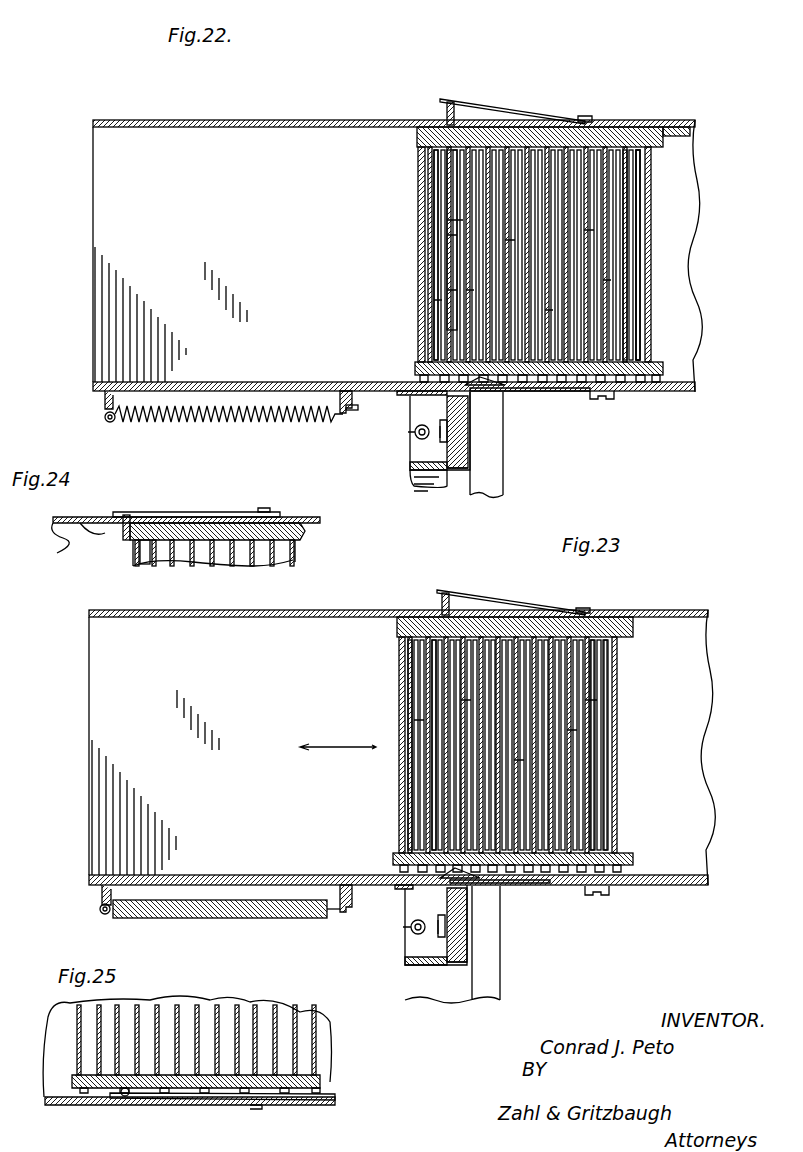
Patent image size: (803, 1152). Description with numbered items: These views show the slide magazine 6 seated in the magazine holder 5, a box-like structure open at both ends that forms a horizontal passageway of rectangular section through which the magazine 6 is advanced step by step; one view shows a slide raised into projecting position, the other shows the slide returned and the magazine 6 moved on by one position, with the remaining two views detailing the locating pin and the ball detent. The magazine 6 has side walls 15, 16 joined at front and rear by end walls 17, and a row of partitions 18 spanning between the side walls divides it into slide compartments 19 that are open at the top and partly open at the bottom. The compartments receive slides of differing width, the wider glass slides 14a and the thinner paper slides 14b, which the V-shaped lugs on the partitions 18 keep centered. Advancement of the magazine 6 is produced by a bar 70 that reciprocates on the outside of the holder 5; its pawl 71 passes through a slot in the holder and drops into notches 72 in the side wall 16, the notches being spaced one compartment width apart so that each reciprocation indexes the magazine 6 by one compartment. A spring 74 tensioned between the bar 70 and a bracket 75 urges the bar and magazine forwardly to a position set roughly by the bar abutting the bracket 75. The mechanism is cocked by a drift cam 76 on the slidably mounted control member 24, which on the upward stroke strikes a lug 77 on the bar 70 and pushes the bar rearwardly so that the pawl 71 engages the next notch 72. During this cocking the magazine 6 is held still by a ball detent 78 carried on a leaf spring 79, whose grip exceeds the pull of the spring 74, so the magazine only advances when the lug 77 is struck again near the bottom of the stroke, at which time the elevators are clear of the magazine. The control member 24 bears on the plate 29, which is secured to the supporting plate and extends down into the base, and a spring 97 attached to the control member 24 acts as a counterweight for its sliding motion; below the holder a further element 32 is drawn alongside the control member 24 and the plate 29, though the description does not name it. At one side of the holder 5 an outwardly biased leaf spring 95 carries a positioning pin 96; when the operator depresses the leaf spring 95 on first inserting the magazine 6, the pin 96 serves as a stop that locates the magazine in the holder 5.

In FIG. 22, the magazine holder 5 is at (220, 120).
In FIG. 24, the magazine holder 5 is at (57, 530).
In FIG. 23, the magazine holder 5 is at (343, 616).
In FIG. 25, the magazine holder 5 is at (62, 1105).
In FIG. 22, the slide magazine 6 is at (416, 208).
In FIG. 23, the slide magazine 6 is at (398, 692).
In FIG. 25, the slide magazine 6 is at (66, 1026).
In FIG. 22, the wider slides 14a is at (543, 140).
In FIG. 23, the wider slides 14a is at (423, 754).
In FIG. 22, the narrower slides 14b is at (638, 125).
In FIG. 23, the narrower slides 14b is at (407, 722).
In FIG. 22, the side wall 15 is at (418, 137).
In FIG. 24, the side wall 15 is at (196, 528).
In FIG. 23, the side wall 15 is at (397, 626).
In FIG. 22, the side wall 16 is at (415, 365).
In FIG. 23, the side wall 16 is at (395, 856).
In FIG. 22, the end walls 17 is at (418, 301).
In FIG. 23, the end walls 17 is at (399, 814).
In FIG. 22, the partitions 18 is at (650, 202).
In FIG. 24, the partitions 18 is at (238, 562).
In FIG. 23, the partitions 18 is at (610, 694).
In FIG. 22, the slide compartments 19 is at (646, 155).
In FIG. 24, the slide compartments 19 is at (157, 563).
In FIG. 23, the slide compartments 19 is at (616, 762).
In FIG. 22, the control member 24 is at (414, 462).
In FIG. 23, the control member 24 is at (435, 977).
In FIG. 22, the plate 29 is at (460, 474).
In FIG. 23, the plate 29 is at (458, 966).
In FIG. 22, the outlet pipe 32 is at (492, 477).
In FIG. 23, the outlet pipe 32 is at (498, 996).
In FIG. 22, the bar 70 is at (523, 385).
In FIG. 23, the bar 70 is at (500, 887).
In FIG. 22, the pawl 71 is at (487, 385).
In FIG. 23, the pawl 71 is at (470, 880).
In FIG. 22, the notches 72 is at (618, 395).
In FIG. 23, the notches 72 is at (576, 865).
In FIG. 22, the spring 74 is at (227, 423).
In FIG. 23, the spring 74 is at (266, 923).
In FIG. 22, the bracket 75 is at (105, 409).
In FIG. 23, the bracket 75 is at (102, 902).
In FIG. 22, the drift cam 76 is at (412, 400).
In FIG. 23, the drift cam 76 is at (395, 891).
In FIG. 22, the lug 77 is at (424, 419).
In FIG. 23, the lug 77 is at (410, 910).
In FIG. 25, the ball detent 78 is at (124, 1096).
In FIG. 25, the leaf spring 79 is at (160, 1098).
In FIG. 22, the leaf spring 95 is at (475, 100).
In FIG. 24, the leaf spring 95 is at (160, 508).
In FIG. 23, the leaf spring 95 is at (488, 598).
In FIG. 22, the positioning pin 96 is at (446, 105).
In FIG. 24, the positioning pin 96 is at (125, 543).
In FIG. 23, the positioning pin 96 is at (442, 594).
In FIG. 22, the spring 97 is at (422, 432).
In FIG. 23, the spring 97 is at (418, 935).